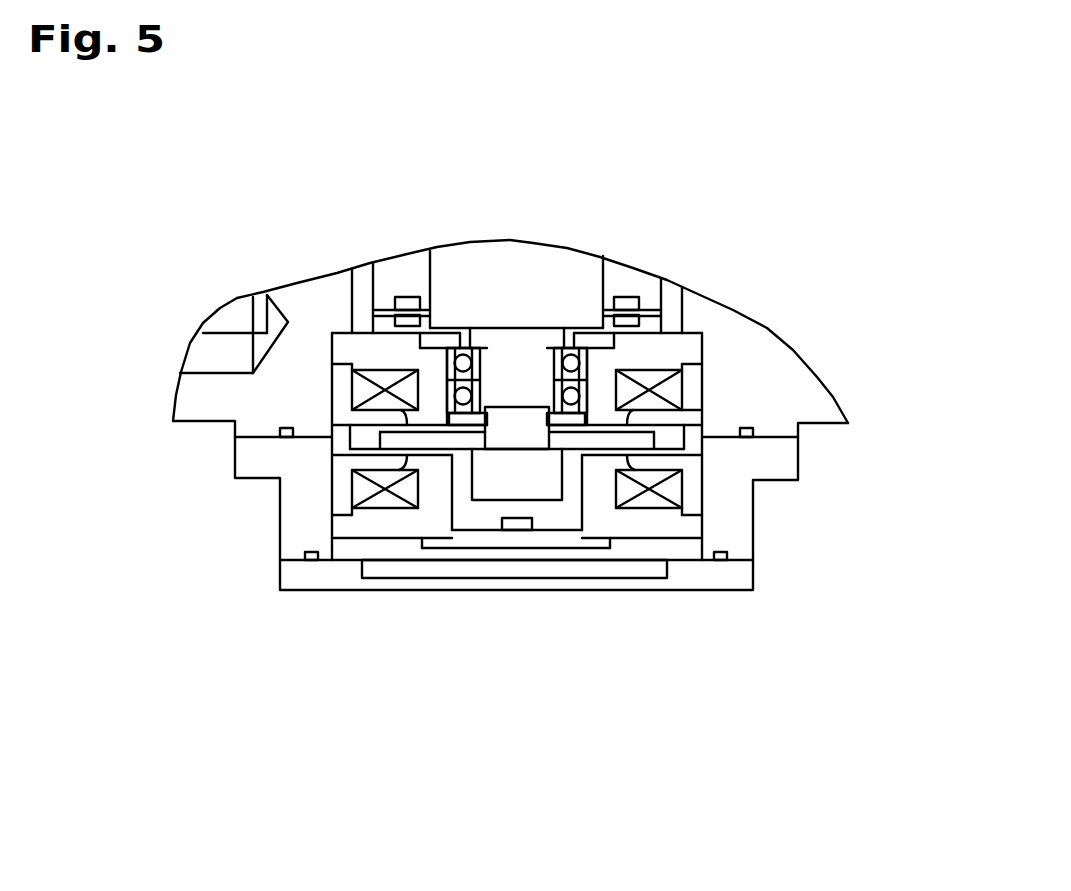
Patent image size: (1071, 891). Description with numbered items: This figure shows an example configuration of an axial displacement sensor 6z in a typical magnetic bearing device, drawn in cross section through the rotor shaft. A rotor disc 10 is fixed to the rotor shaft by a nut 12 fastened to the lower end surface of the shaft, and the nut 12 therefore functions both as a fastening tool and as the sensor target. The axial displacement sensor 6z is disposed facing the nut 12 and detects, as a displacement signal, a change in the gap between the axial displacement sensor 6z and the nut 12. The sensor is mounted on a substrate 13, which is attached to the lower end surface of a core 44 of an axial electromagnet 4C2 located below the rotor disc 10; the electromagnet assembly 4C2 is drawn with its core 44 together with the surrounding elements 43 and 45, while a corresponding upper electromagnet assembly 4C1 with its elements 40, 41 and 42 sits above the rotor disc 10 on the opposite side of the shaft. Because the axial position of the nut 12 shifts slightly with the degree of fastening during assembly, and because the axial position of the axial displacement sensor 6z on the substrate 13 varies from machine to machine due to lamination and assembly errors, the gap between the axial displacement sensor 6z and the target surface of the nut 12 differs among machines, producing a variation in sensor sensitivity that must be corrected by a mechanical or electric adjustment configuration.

The rotor disc 10 is at (388, 440).
The nut 12 is at (495, 480).
The substrate 13 is at (462, 540).
The axial displacement sensor 6z is at (514, 533).
The first stator coil 40 is at (667, 387).
The first stator core 41 is at (657, 349).
The first stator bobbin 42 is at (692, 404).
The second stator coil 43 is at (648, 503).
The core 44 is at (630, 527).
The second stator bobbin 45 is at (690, 493).
The first stator unit 4C1 is at (872, 255).
The axial electromagnet 4C2 is at (738, 695).